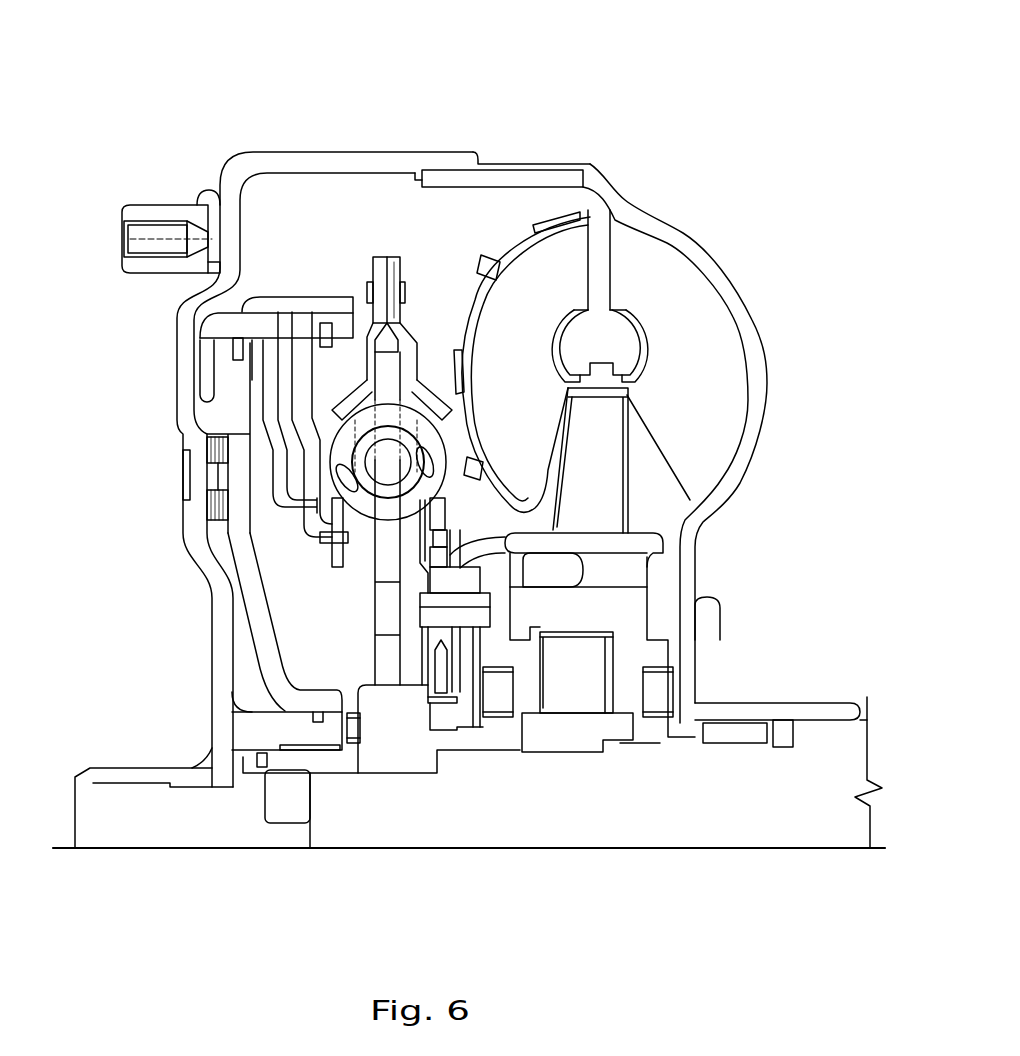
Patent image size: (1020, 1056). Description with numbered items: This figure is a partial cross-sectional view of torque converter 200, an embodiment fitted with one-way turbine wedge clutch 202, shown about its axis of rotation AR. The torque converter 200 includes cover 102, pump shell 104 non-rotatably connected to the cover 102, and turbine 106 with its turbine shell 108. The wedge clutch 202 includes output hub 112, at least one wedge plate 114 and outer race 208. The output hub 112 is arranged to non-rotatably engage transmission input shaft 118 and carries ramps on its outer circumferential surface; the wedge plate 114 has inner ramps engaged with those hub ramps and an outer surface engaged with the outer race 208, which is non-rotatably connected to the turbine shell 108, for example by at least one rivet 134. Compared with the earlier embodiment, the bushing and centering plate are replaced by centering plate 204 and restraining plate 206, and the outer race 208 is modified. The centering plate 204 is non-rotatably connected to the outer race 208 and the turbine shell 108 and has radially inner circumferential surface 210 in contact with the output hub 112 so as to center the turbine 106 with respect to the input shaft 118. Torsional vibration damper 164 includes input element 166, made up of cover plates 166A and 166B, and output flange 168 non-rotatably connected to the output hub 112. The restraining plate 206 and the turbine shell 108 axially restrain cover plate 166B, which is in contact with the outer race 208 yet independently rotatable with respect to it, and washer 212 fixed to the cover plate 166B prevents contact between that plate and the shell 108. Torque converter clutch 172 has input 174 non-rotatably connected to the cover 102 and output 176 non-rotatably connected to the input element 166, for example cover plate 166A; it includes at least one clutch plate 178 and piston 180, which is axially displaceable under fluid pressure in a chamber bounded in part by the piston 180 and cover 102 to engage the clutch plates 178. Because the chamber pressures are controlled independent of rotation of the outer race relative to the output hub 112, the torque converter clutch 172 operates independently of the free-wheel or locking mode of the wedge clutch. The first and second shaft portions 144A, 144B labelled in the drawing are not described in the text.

The cover 102 is at (258, 170).
The pump shell 104 is at (605, 182).
The turbine 106 is at (573, 245).
The turbine shell 108 is at (545, 227).
The output hub 112 is at (395, 750).
The wedge plate 114 is at (450, 668).
The transmission input shaft 118 is at (867, 705).
The rivet 134 is at (437, 600).
The first shaft portion 144A is at (422, 707).
The second shaft portion 144B is at (447, 703).
The torsional vibration damper 164 is at (357, 277).
The input element 166 is at (390, 240).
The cover plate 166A is at (380, 267).
The cover plate 166B is at (397, 270).
The output flange 168 is at (520, 512).
The torque converter clutch 172 is at (228, 311).
The input 174 is at (203, 345).
The output 176 is at (307, 535).
The clutch plate 178 is at (220, 413).
The piston 180 is at (237, 383).
The torque converter 200 is at (742, 186).
The one-way turbine wedge clutch 202 is at (492, 580).
The centering plate 204 is at (492, 647).
The restraining plate 206 is at (388, 565).
The outer race 208 is at (443, 582).
The radially inner circumferential surface 210 is at (487, 723).
The washer 212 is at (520, 512).
The axis of rotation AR is at (794, 850).